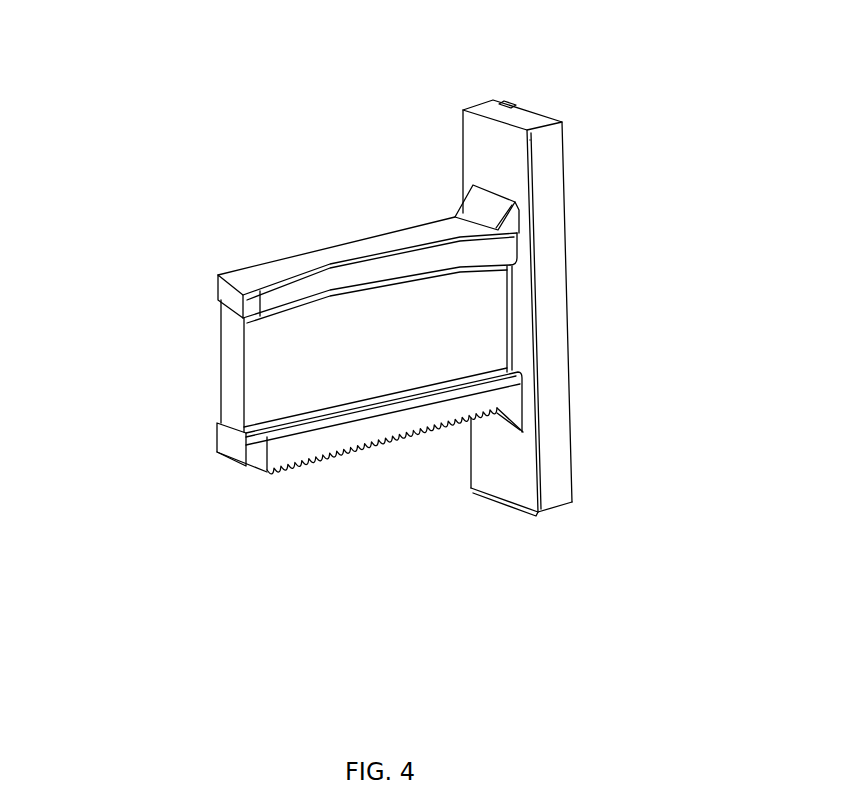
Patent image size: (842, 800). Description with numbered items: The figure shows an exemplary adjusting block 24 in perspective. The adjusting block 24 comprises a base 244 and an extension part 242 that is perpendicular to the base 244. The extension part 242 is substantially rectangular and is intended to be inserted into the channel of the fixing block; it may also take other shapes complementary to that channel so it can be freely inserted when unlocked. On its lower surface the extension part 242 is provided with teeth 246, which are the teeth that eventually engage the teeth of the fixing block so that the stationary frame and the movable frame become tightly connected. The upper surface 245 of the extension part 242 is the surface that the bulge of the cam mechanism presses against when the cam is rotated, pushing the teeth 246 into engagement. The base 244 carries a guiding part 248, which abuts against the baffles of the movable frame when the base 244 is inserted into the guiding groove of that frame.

The adjusting block 24 is at (470, 728).
The extension part 242 is at (217, 306).
The base 244 is at (468, 108).
The upper surface 245 is at (343, 253).
The teeth 246 is at (303, 463).
The guiding part 248 is at (520, 325).